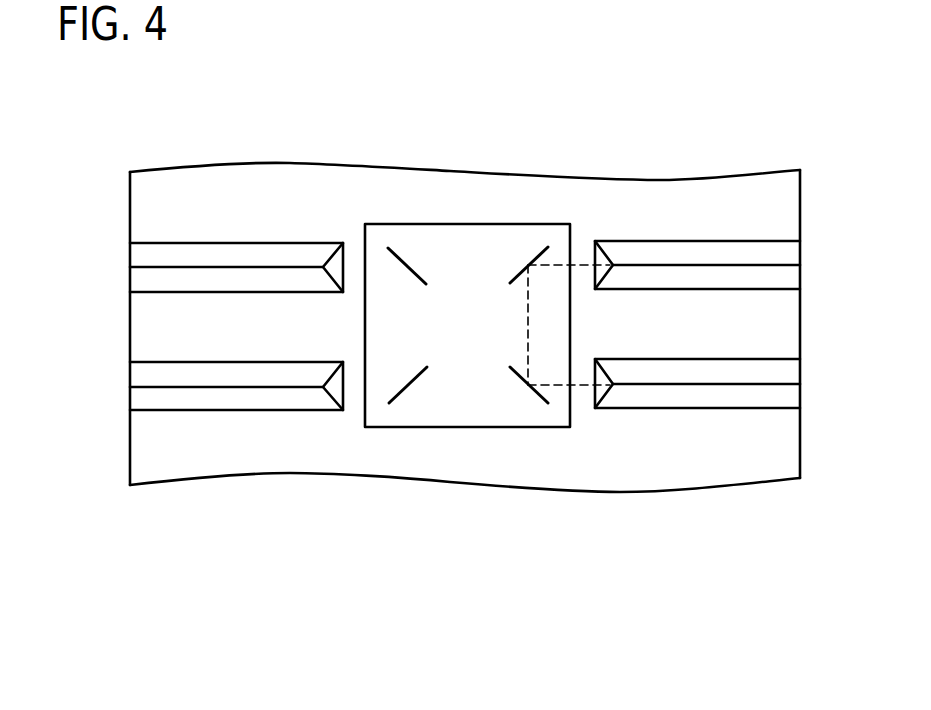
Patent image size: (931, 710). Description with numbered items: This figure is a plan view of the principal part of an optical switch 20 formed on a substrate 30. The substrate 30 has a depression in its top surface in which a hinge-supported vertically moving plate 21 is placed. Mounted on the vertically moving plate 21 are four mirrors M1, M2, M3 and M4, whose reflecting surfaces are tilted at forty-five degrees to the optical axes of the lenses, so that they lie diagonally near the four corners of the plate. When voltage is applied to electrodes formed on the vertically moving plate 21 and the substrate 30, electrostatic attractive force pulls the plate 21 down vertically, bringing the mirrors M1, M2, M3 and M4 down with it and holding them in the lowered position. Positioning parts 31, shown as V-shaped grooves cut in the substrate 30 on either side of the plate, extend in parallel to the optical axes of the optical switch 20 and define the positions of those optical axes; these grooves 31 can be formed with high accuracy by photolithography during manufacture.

The optical switch 20 is at (578, 88).
The vertically moving plate 21 is at (460, 248).
The substrate 30 is at (700, 205).
The positioning parts 31 is at (620, 397).
The mirror M1 is at (514, 273).
The mirror M2 is at (517, 375).
The mirror M3 is at (410, 262).
The mirror M4 is at (412, 388).